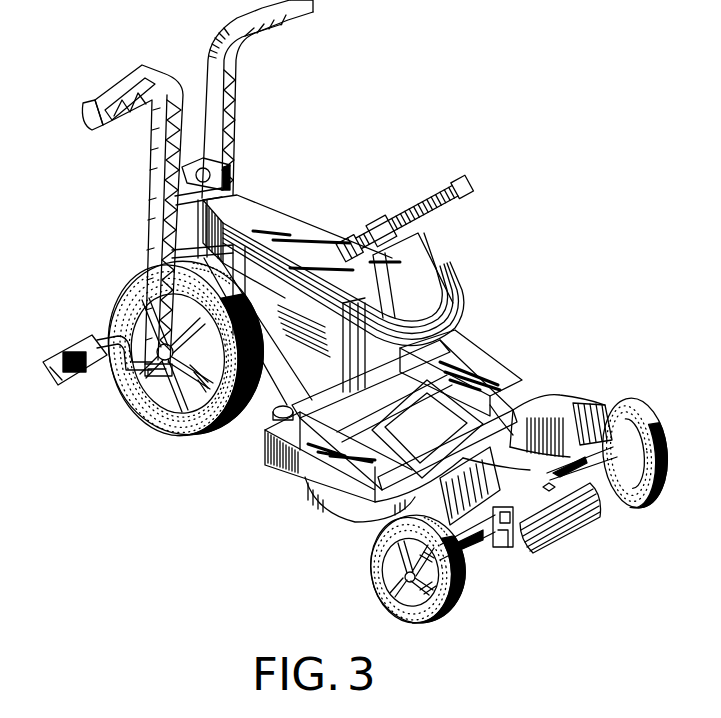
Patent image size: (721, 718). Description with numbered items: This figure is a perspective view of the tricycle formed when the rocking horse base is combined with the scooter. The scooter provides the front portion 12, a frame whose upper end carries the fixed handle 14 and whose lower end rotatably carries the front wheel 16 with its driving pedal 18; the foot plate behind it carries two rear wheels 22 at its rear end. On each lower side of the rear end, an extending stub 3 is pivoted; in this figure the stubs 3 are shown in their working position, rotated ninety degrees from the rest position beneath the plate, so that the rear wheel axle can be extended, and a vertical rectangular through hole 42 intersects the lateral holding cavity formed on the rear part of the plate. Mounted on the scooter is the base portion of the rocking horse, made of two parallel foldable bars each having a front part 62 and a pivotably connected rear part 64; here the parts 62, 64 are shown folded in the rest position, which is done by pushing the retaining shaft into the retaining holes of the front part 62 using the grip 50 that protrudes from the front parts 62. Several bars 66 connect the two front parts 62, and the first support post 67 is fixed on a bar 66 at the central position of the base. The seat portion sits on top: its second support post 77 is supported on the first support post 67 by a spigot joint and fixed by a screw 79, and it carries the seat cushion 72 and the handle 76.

The extending stub 3 is at (483, 548).
The front portion 12 is at (148, 200).
The handle 14 is at (294, 28).
The front wheel 16 is at (208, 430).
The driving pedal 18 is at (88, 366).
The rear wheel 22 is at (390, 597).
The rectangular through hole 42 is at (513, 548).
The grip 50 is at (473, 357).
The front part 62 is at (533, 403).
The rear part 64 is at (568, 398).
The bar 66 is at (443, 352).
The first support post 67 is at (292, 403).
The seat cushion 72 is at (316, 224).
The handle 76 is at (462, 185).
The second support post 77 is at (317, 308).
The screw 79 is at (385, 318).